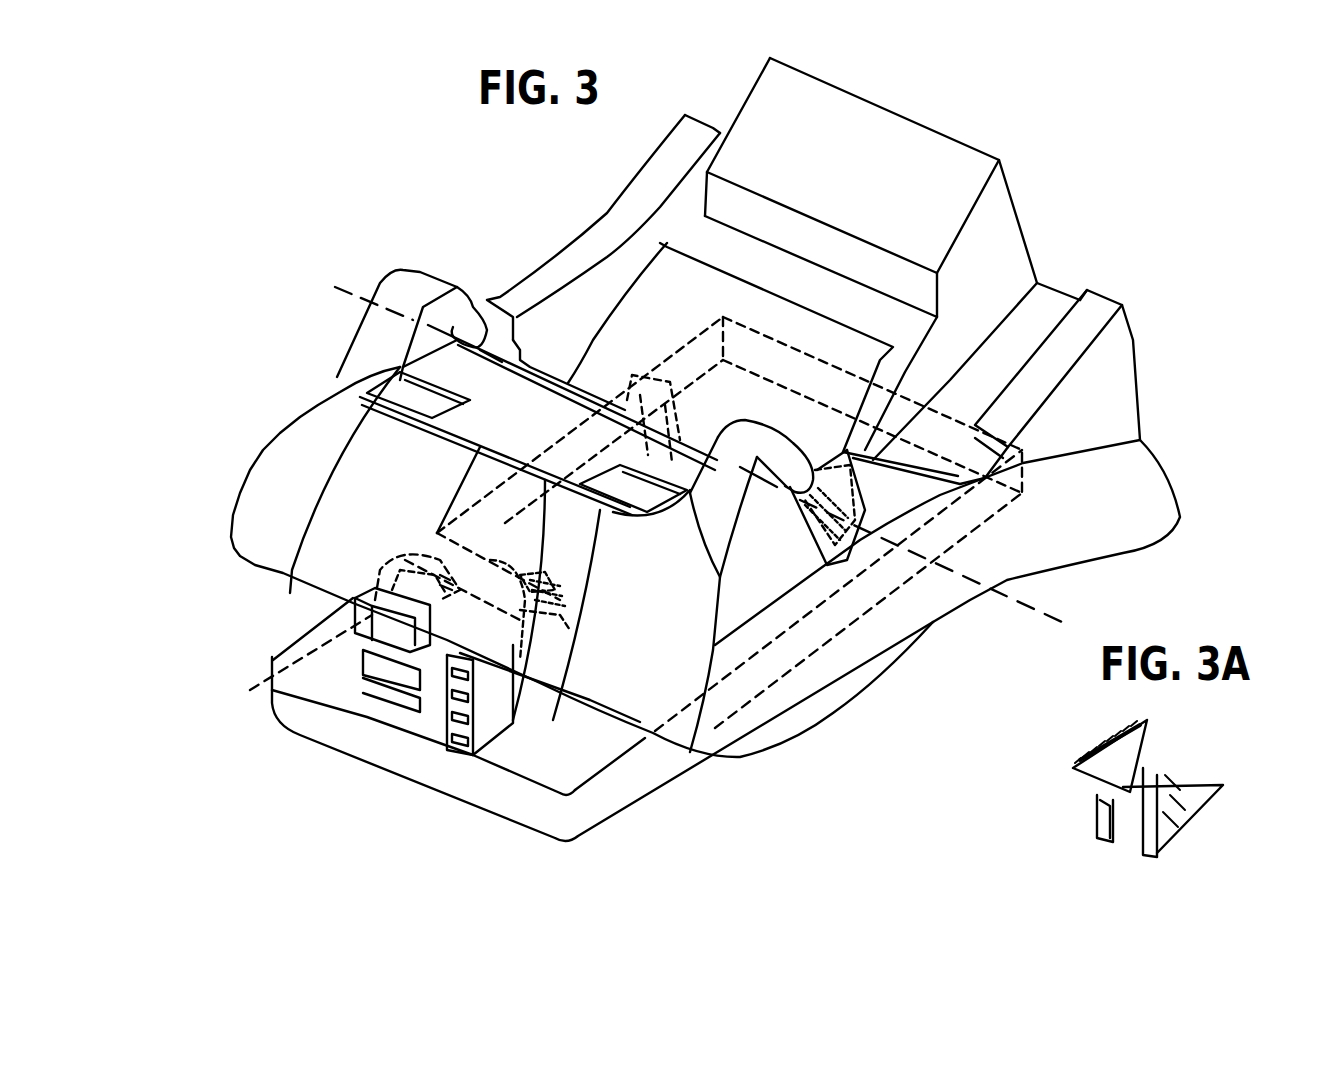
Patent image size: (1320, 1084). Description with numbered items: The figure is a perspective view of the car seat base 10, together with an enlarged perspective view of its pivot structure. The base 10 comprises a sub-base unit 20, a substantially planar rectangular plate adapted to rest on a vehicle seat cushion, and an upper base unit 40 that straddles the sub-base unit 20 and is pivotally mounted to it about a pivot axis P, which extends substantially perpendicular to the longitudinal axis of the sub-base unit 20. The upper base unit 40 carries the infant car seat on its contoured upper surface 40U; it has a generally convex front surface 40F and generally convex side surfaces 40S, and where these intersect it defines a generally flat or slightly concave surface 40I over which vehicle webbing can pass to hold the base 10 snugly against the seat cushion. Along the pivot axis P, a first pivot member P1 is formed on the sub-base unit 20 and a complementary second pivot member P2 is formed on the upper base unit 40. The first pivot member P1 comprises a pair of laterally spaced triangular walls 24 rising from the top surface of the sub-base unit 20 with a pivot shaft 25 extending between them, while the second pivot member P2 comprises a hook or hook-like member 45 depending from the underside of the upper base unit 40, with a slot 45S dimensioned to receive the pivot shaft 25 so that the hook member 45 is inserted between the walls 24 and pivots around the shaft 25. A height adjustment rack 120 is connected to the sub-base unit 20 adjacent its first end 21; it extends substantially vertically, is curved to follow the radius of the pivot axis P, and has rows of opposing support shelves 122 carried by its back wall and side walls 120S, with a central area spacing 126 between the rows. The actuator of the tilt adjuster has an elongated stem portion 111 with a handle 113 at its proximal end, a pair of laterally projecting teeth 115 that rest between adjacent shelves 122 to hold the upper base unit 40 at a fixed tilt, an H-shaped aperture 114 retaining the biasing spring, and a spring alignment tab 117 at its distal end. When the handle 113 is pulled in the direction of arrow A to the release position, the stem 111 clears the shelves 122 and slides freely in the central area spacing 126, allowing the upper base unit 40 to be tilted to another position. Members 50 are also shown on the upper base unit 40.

In FIG. 3, the base 10 is at (312, 242).
In FIG. 3, the sub-base unit 20 is at (657, 767).
In FIG. 3, the first end 21 is at (514, 803).
In FIG. 3A, the triangular walls 24 is at (1110, 832).
In FIG. 3A, the pivot shaft 25 is at (1160, 768).
In FIG. 3, the upper base unit 40 is at (1116, 372).
In FIG. 3, the contoured upper surface 40U is at (690, 327).
In FIG. 3, the front surface 40F is at (330, 560).
In FIG. 3, the side surfaces 40S is at (880, 643).
In FIG. 3, the flat or slightly concave surface 40I is at (720, 727).
In FIG. 3, the hook member 45 is at (827, 507).
In FIG. 3A, the hook member 45 is at (1137, 747).
In FIG. 3A, the slot 45S is at (1115, 800).
In FIG. 3, the hook 50 is at (417, 287).
In FIG. 3, the stem portion 111 is at (567, 633).
In FIG. 3, the handle 113 is at (365, 606).
In FIG. 3, the H-shaped aperture 114 is at (537, 568).
In FIG. 3, the teeth 115 is at (552, 673).
In FIG. 3, the spring alignment tab 117 is at (575, 575).
In FIG. 3, the height adjustment rack 120 is at (450, 690).
In FIG. 3, the side walls 120S is at (505, 712).
In FIG. 3, the support shelves 122 is at (370, 655).
In FIG. 3, the central area spacing 126 is at (387, 560).
In FIG. 3, the arrow A is at (258, 689).
In FIG. 3, the pivot axis P is at (701, 454).
In FIG. 3A, the first pivot member P1 is at (1231, 754).
In FIG. 3A, the second pivot member P2 is at (1092, 727).